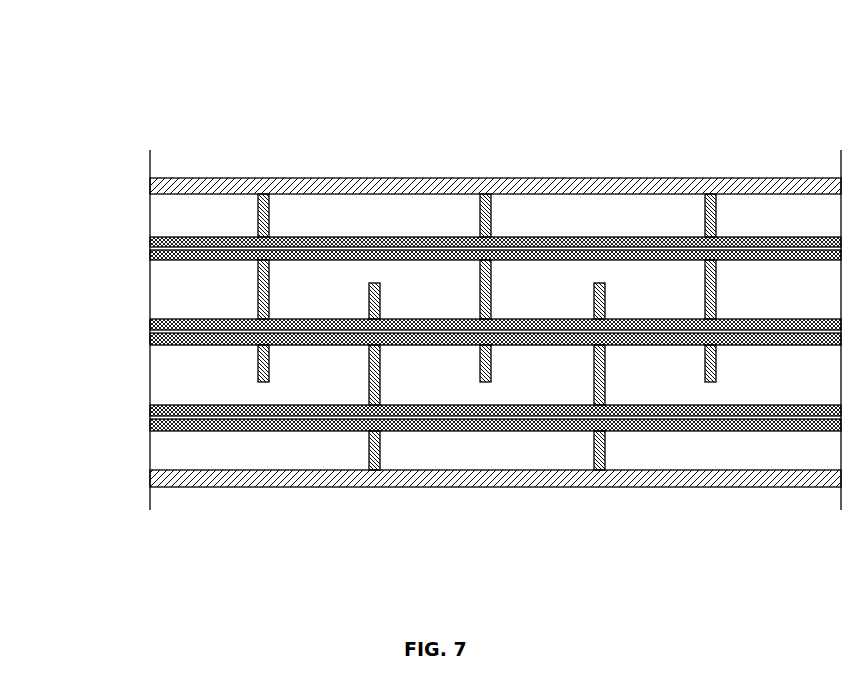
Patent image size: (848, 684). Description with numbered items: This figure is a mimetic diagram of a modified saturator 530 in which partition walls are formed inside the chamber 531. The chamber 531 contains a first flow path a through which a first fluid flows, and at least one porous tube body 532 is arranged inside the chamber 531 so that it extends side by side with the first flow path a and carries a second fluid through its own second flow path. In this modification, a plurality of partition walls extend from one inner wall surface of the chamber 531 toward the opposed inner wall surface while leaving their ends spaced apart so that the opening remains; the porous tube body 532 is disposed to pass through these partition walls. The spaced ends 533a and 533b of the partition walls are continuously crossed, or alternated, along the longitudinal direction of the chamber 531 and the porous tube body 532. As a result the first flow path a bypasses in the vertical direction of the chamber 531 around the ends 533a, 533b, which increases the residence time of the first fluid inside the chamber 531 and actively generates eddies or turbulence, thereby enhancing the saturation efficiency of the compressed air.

The saturator 530 is at (807, 45).
The chamber 531 is at (607, 178).
The porous tube body 532 is at (652, 262).
The spaced end of partition wall 533a is at (258, 294).
The spaced end of partition wall 533b is at (368, 375).
The first flow path a is at (418, 295).